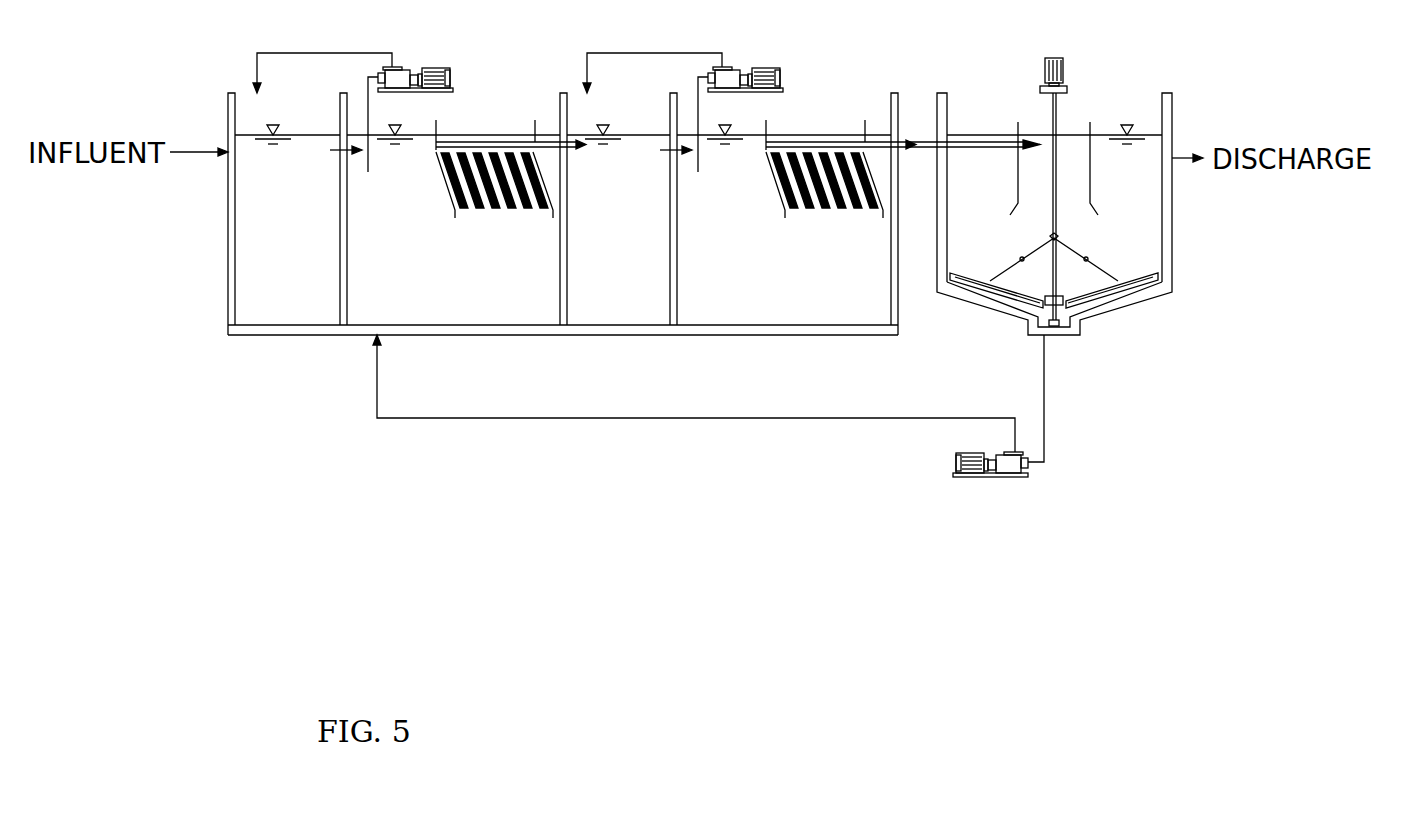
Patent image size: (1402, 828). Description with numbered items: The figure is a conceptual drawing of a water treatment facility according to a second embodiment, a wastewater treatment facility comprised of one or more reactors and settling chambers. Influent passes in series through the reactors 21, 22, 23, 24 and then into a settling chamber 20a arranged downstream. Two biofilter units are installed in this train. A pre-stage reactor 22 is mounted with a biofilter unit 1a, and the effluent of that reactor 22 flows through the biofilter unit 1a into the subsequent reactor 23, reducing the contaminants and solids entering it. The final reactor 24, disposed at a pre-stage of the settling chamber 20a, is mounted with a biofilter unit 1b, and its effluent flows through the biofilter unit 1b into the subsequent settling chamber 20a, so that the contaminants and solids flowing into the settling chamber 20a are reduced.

The biofilter unit 1a is at (437, 120).
The biofilter unit 1b is at (767, 120).
The reactor 21 is at (287, 312).
The pre-stage reactor 22 is at (466, 233).
The reactor 23 is at (617, 312).
The final reactor 24 is at (858, 233).
The settling chamber 20a is at (1165, 232).